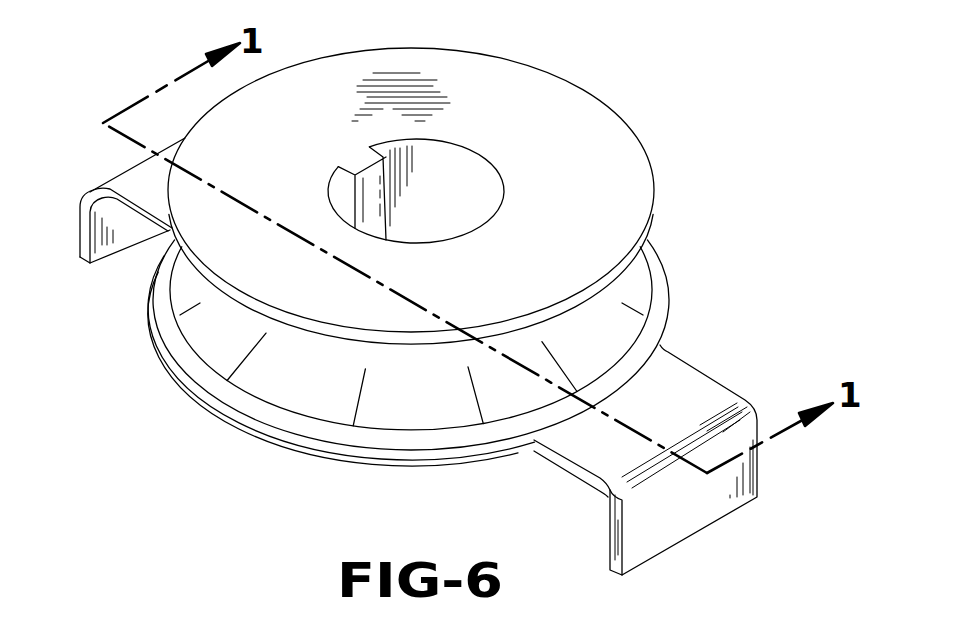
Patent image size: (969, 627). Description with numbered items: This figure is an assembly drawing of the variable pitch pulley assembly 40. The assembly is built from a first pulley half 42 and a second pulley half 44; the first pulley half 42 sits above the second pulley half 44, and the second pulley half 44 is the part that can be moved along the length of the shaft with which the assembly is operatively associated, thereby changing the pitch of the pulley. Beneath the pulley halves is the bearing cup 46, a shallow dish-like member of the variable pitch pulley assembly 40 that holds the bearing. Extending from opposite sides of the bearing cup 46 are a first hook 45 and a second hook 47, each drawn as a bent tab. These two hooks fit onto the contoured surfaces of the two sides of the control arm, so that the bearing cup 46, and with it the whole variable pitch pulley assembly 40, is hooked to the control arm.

The variable pitch pulley assembly 40 is at (430, 299).
The first pulley half 42 is at (613, 160).
The second pulley half 44 is at (640, 303).
The first hook 45 is at (703, 507).
The bearing cup 46 is at (385, 465).
The second hook 47 is at (82, 246).